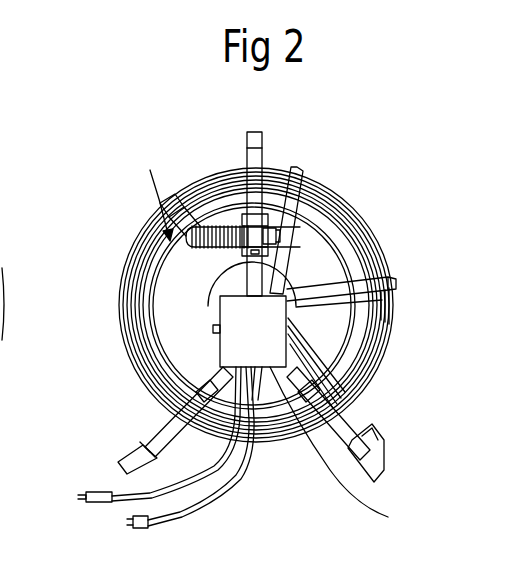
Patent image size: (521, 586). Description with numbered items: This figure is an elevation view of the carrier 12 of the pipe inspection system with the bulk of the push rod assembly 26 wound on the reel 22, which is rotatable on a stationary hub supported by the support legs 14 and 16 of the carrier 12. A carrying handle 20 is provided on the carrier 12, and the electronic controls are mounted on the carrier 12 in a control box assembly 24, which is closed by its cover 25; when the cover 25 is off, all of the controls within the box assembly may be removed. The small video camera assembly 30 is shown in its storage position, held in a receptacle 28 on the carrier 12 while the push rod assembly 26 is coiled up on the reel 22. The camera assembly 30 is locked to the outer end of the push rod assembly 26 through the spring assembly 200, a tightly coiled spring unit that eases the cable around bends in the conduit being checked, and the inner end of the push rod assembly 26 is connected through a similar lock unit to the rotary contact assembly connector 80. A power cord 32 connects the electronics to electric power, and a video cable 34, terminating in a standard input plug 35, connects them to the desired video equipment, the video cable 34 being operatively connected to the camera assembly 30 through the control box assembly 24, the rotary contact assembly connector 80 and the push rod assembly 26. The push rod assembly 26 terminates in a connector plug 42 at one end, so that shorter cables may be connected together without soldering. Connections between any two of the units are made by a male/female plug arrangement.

The carrier 12 is at (243, 130).
The support leg 14 is at (137, 433).
The support leg 16 is at (365, 432).
The carrying handle 20 is at (263, 148).
The reel 22 is at (165, 199).
The control box assembly 24 is at (210, 305).
The cover 25 is at (345, 450).
The push rod assembly 26 is at (336, 233).
The receptacle 28 is at (216, 216).
The video camera assembly 30 is at (292, 236).
The power cord 32 is at (218, 488).
The video cable 34 is at (125, 496).
The standard input plug 35 is at (78, 498).
The connector plug 42 is at (138, 528).
The rotary contact assembly connector 80 is at (4, 358).
The spring assembly 200 is at (205, 210).